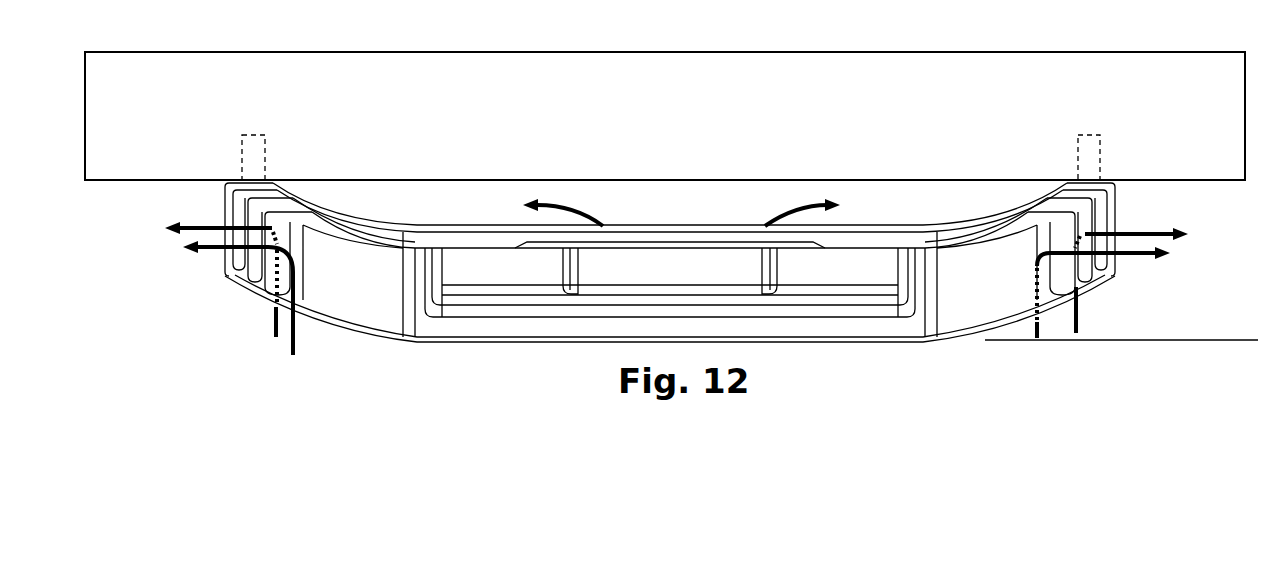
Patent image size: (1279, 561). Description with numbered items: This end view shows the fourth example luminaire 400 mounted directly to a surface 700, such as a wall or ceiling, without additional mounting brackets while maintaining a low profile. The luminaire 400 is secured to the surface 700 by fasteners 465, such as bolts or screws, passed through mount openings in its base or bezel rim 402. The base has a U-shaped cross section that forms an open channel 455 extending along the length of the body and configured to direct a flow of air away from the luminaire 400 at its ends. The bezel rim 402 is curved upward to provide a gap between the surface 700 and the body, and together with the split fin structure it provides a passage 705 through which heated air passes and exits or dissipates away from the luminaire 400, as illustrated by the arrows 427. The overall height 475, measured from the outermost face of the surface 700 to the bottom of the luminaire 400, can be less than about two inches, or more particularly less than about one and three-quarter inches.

The surface 700 is at (687, 93).
The fasteners 465 is at (255, 152).
The open channel 455 is at (465, 205).
The arrows 427 is at (220, 240).
The passage 705 is at (667, 211).
The height 475 is at (1230, 183).
The fourth example luminaire 400 is at (510, 347).
The bezel rim 402 is at (350, 297).